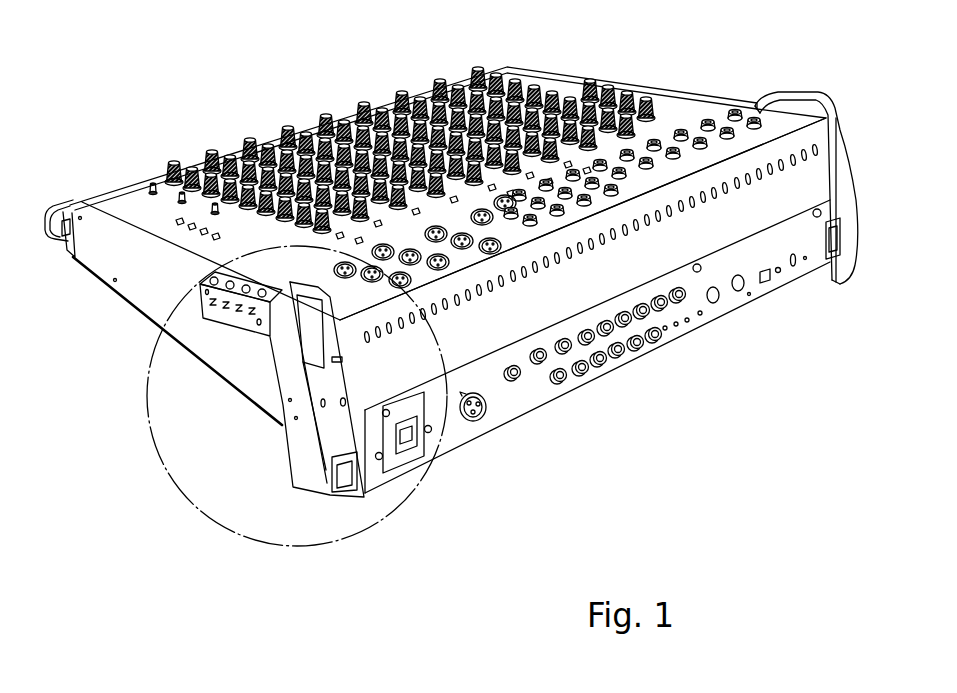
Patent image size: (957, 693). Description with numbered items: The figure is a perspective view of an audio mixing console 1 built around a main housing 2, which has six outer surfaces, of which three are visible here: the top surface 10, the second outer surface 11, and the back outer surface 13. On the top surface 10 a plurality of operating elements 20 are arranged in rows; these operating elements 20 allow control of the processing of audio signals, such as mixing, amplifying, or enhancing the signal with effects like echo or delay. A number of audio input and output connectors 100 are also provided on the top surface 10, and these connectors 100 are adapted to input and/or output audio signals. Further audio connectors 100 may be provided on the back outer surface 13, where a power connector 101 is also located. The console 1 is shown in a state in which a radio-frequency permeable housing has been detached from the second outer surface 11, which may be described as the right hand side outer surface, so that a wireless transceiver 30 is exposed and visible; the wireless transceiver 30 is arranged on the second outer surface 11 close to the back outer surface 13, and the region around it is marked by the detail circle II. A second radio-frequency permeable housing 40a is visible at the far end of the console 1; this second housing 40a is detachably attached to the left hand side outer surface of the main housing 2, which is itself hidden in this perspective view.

The audio mixing console 1 is at (84, 156).
The main housing 2 is at (133, 199).
The top surface 10 is at (683, 123).
The second outer surface 11 is at (147, 290).
The back outer surface 13 is at (777, 247).
The operating elements 20 is at (240, 152).
The wireless transceiver 30 is at (281, 374).
The second radio-frequency permeable housing 40a is at (820, 110).
The audio input and output connectors 100 is at (707, 128).
The power connector 101 is at (405, 440).
The detail region II is at (160, 470).